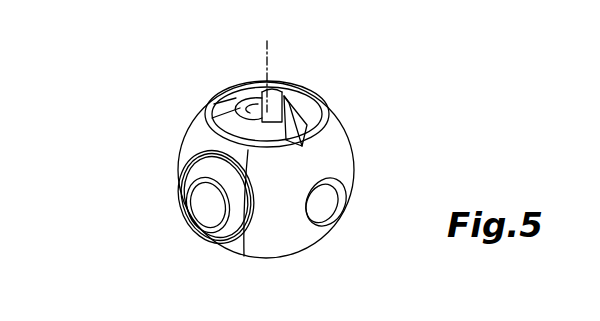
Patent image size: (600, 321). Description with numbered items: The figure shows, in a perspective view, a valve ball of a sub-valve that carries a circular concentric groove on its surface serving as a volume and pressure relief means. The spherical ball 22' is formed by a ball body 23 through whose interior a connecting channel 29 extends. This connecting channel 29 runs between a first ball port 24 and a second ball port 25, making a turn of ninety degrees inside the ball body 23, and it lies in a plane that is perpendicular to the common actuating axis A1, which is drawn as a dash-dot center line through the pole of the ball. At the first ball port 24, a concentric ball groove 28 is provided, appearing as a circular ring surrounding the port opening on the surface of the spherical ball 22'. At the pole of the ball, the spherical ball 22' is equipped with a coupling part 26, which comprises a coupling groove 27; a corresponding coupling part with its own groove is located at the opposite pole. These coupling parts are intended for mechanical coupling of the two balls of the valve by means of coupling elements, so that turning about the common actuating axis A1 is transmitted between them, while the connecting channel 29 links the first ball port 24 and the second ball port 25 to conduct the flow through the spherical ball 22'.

The spherical ball 22' is at (328, 168).
The ball body 23 is at (192, 140).
The common actuating axis A1 is at (266, 52).
The coupling part 26 is at (300, 93).
The coupling groove 27 is at (298, 128).
The concentric ball groove 28 is at (181, 160).
The connecting channel 29 is at (215, 201).
The first ball port 24 is at (218, 222).
The second ball port 25 is at (322, 222).